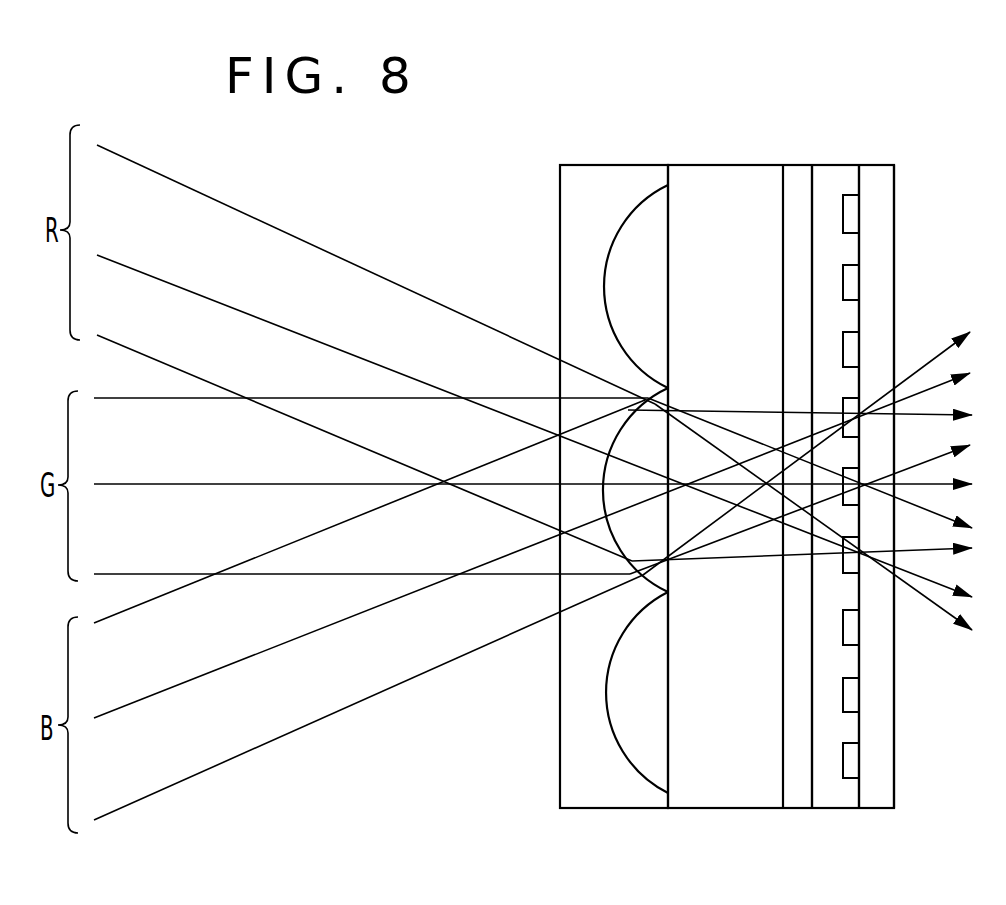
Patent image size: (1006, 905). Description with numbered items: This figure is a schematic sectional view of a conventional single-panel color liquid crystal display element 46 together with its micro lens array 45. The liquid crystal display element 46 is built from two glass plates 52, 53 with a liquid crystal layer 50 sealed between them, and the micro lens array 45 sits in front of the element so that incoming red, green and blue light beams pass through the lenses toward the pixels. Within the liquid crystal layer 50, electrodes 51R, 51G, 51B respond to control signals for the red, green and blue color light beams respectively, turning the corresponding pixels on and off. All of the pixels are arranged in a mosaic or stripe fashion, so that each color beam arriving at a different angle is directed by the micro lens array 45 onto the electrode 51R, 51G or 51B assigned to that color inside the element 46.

The micro lens array 45 is at (611, 195).
The liquid crystal display element 46 is at (899, 820).
The liquid crystal layer 50 is at (833, 187).
The glass plate 52 is at (797, 188).
The glass plate 53 is at (878, 183).
The electrode 51R is at (855, 203).
The electrode 51G is at (853, 272).
The electrode 51B is at (853, 340).